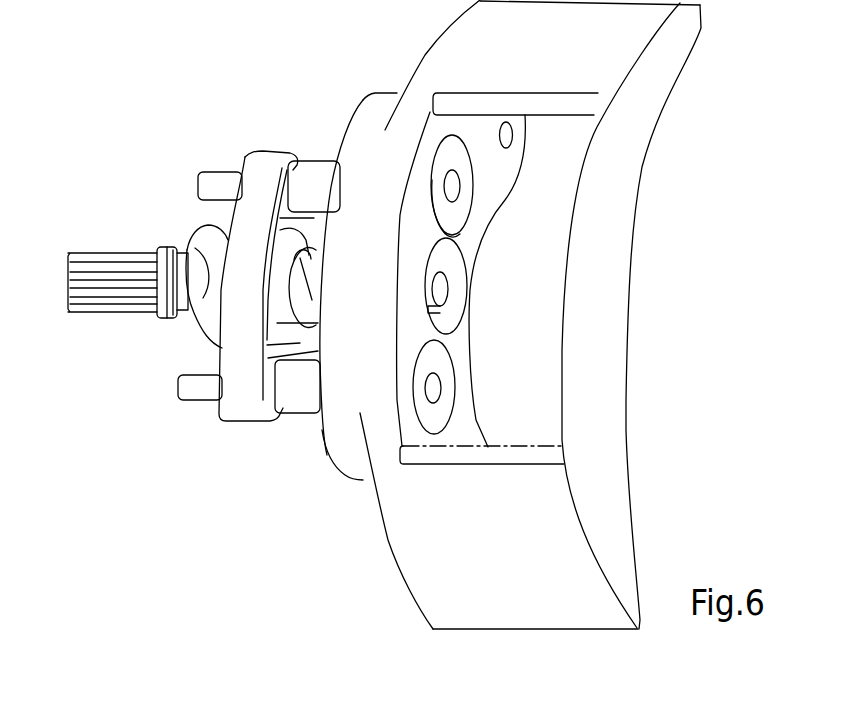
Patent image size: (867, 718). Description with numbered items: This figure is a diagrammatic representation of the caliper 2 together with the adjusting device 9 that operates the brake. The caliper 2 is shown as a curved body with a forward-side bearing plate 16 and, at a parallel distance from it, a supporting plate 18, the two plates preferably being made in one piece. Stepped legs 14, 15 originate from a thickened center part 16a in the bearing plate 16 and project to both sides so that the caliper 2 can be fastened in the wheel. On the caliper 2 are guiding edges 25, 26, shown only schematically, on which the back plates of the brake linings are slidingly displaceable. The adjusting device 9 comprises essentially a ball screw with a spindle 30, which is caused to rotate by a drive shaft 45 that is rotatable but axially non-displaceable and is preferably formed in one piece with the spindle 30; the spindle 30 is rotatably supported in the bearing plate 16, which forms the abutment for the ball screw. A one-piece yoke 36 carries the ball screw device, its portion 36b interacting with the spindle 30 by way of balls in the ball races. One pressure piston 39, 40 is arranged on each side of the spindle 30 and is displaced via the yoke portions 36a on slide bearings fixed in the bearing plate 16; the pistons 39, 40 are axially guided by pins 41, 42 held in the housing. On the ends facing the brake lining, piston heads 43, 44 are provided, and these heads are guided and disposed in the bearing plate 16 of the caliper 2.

The caliper 2 is at (532, 638).
The adjusting device 9 is at (215, 148).
The stepped leg 14 is at (400, 560).
The stepped leg 15 is at (428, 52).
The bearing plate 16 is at (363, 97).
The thickened center part 16a is at (340, 442).
The supporting plate 18 is at (623, 340).
The guiding edge 25 is at (562, 93).
The guiding edge 26 is at (488, 455).
The spindle 30 is at (297, 298).
The yoke 36 is at (218, 302).
The yoke portion 36a is at (275, 157).
The yoke portion 36b is at (187, 291).
The pressure piston 39 is at (295, 400).
The pressure piston 40 is at (318, 170).
The pin 41 is at (192, 390).
The pin 42 is at (203, 187).
The piston head 43 is at (435, 420).
The piston head 44 is at (457, 150).
The drive shaft 45 is at (84, 252).